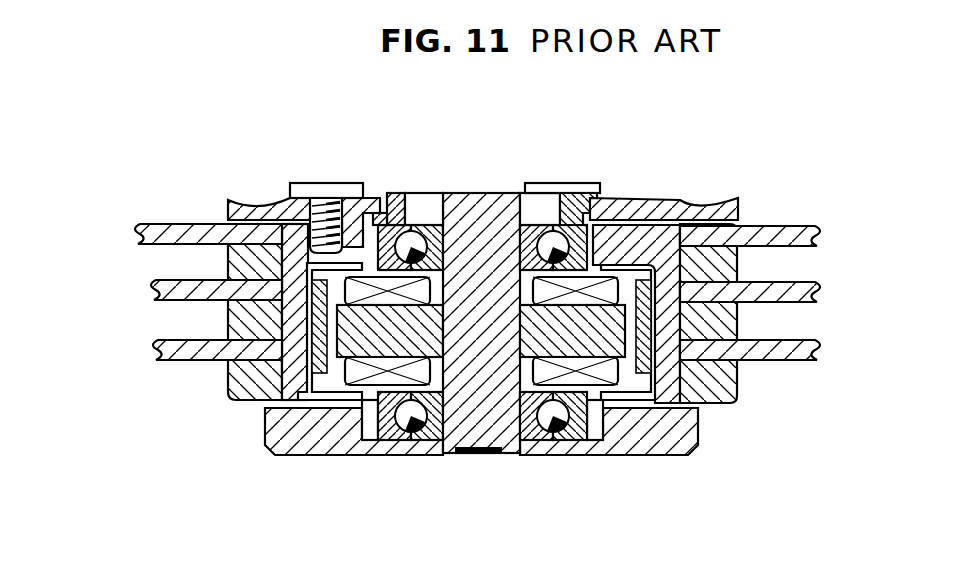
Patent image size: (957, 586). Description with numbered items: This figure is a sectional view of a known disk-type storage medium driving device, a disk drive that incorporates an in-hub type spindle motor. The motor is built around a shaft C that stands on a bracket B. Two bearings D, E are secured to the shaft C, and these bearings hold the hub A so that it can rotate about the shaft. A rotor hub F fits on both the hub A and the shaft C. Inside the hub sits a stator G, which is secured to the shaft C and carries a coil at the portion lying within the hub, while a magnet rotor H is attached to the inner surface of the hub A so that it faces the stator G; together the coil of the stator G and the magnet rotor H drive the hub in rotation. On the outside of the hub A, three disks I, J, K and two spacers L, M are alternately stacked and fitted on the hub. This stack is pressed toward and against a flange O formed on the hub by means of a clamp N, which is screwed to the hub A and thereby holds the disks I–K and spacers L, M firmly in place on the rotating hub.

The hub A is at (637, 247).
The bracket B is at (427, 456).
The shaft C is at (452, 220).
The bearing D is at (528, 456).
The bearing E is at (538, 224).
The rotor hub F is at (566, 222).
The stator G is at (586, 383).
The magnet rotor H is at (723, 237).
The disk I is at (154, 352).
The disk J is at (156, 286).
The disk K is at (150, 228).
The spacer L is at (724, 270).
The spacer M is at (727, 310).
The clamp N is at (697, 209).
The flange O is at (717, 392).